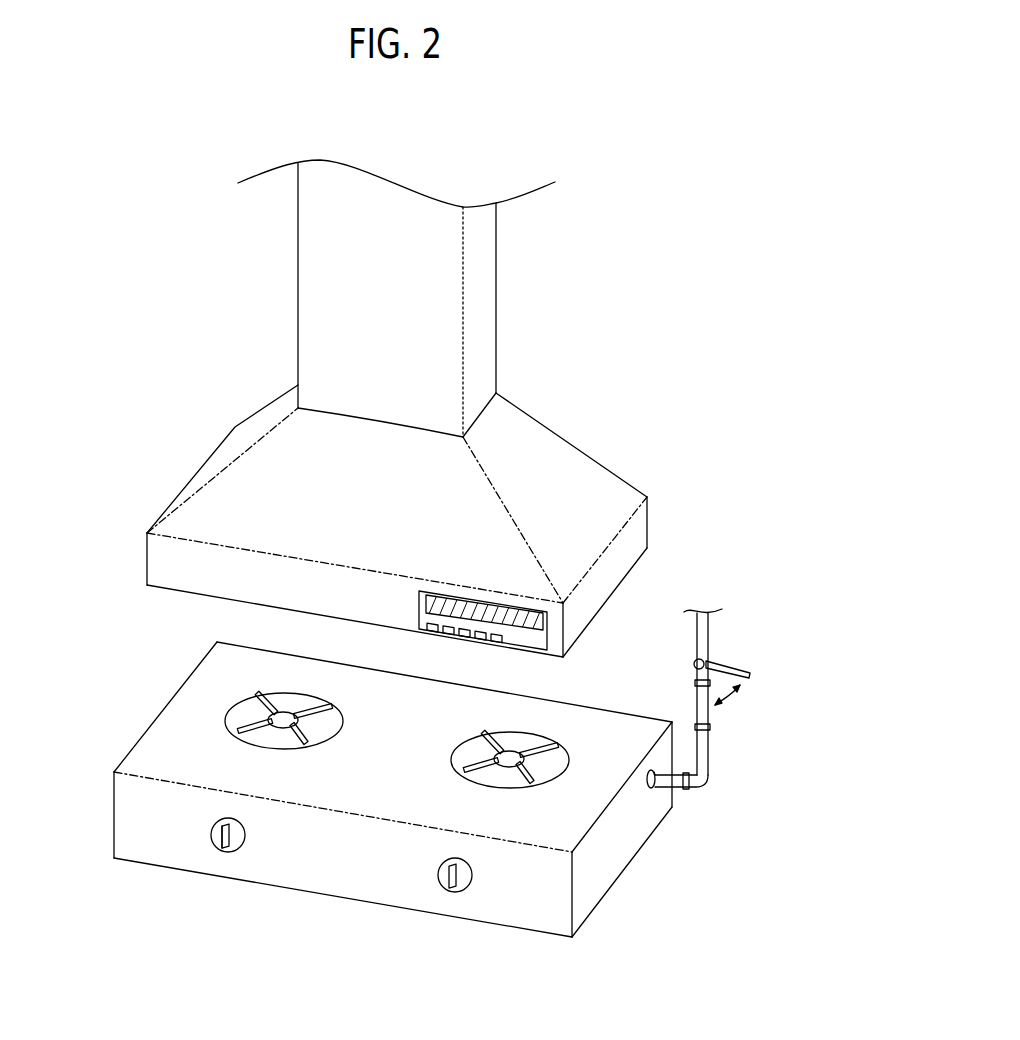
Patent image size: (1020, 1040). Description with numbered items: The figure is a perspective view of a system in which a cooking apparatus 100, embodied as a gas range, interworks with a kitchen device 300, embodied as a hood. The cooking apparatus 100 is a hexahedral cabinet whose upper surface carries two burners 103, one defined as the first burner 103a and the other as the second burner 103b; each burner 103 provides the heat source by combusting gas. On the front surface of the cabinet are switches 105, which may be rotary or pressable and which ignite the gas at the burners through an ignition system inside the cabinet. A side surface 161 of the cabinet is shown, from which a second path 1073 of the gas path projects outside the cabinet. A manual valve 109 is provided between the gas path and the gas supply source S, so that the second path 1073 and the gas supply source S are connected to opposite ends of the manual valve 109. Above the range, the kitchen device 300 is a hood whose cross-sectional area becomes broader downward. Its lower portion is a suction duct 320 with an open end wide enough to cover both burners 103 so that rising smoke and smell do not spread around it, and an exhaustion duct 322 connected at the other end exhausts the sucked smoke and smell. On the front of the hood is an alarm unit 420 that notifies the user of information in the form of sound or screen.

The cooking apparatus 100 is at (382, 822).
The burner 103 is at (397, 852).
The first burner 103a is at (282, 742).
The second burner 103b is at (478, 775).
The switch 105 is at (220, 848).
The side surface of cooktop body 161 is at (585, 882).
The manual valve 109 is at (735, 645).
The second path 1073 is at (700, 783).
The gas supply source S is at (721, 702).
The kitchen device 300 is at (398, 420).
The suction duct 320 is at (583, 455).
The exhaustion duct 322 is at (487, 282).
The alarm unit 420 is at (540, 642).